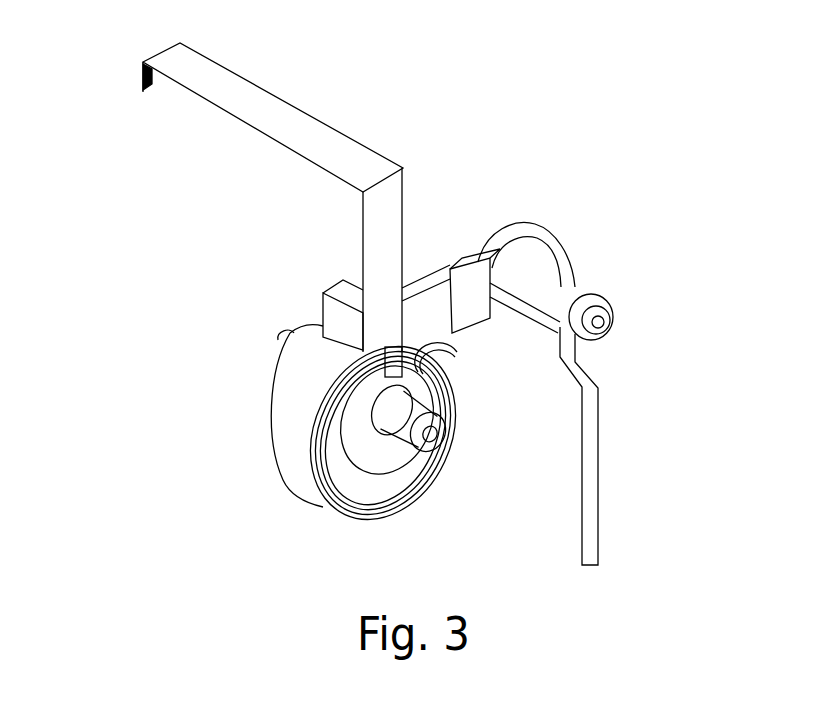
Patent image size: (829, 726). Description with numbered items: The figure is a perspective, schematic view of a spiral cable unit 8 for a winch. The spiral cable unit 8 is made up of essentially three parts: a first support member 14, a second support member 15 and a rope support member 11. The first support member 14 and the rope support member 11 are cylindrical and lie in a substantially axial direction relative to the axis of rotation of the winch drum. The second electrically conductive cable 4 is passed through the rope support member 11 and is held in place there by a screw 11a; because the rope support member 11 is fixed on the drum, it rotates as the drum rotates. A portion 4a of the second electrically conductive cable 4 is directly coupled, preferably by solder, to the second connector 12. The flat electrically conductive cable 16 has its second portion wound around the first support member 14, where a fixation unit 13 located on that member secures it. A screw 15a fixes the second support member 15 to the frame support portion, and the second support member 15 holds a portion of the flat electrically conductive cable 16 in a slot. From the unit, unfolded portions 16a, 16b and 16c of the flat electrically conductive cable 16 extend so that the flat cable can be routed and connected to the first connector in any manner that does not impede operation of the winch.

The spiral cable unit 8 is at (677, 120).
The second electrically conductive cable 4 is at (598, 500).
The portion of the second electrically conductive cable 4a is at (548, 230).
The rope support member 11 is at (591, 283).
The screw 11a is at (612, 332).
The second connector 12 is at (452, 268).
The fixation unit 13 is at (420, 467).
The first support member 14 is at (273, 350).
The second support member 15 is at (444, 273).
The screw 15a is at (448, 342).
The flat electrically conductive cable 16 is at (293, 497).
The unfolded portion of the flat electrically conductive cable 16a is at (140, 75).
The unfolded portion of the flat electrically conductive cable 16b is at (268, 88).
The unfolded portion of the flat electrically conductive cable 16c is at (361, 238).